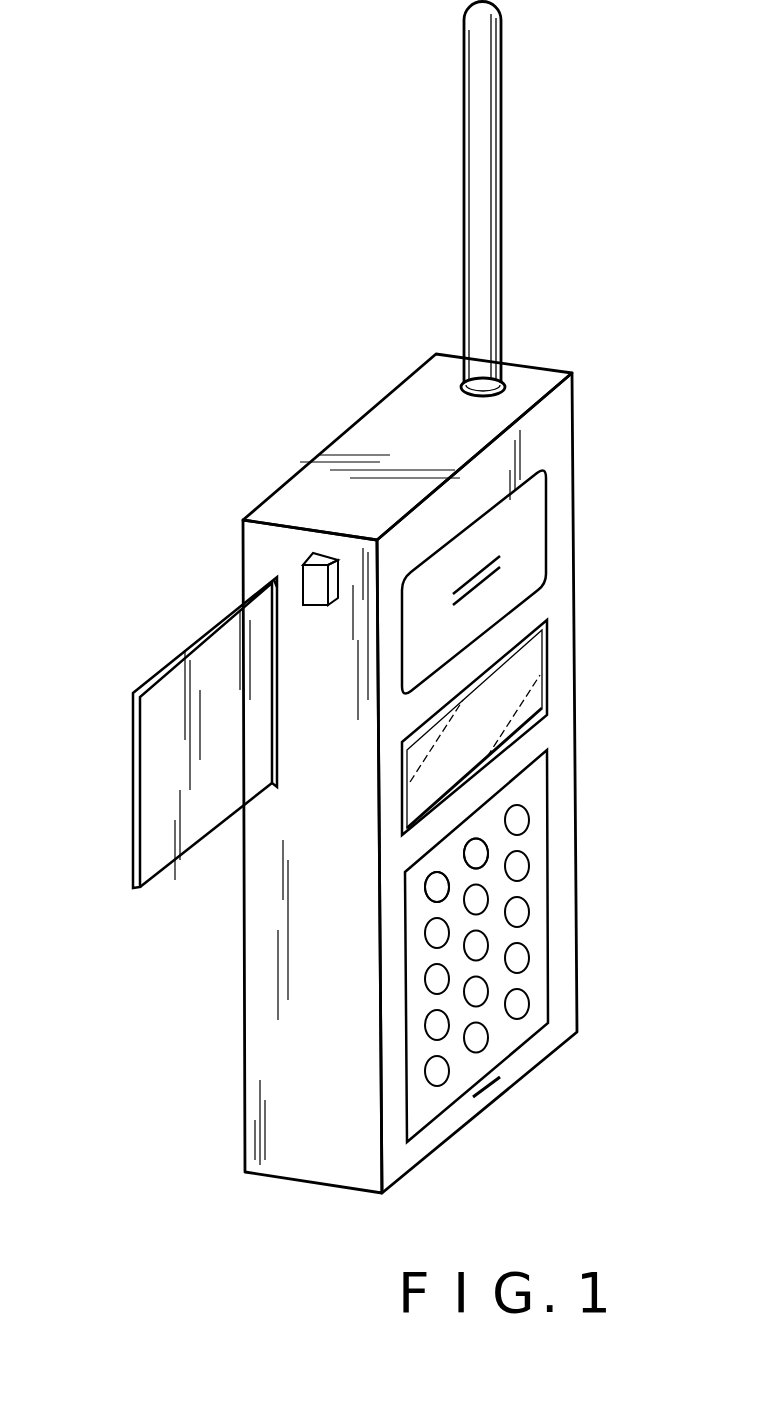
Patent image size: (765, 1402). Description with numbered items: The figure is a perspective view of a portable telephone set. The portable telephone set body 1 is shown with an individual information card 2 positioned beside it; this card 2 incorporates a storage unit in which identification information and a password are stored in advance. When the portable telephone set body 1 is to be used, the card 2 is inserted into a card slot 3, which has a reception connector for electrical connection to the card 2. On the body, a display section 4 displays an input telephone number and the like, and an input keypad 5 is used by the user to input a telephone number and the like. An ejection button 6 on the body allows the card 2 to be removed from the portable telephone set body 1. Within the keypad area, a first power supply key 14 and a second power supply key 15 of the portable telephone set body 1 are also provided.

The portable telephone set body 1 is at (262, 1028).
The individual information card 2 is at (167, 845).
The card slot 3 is at (268, 578).
The display section 4 is at (527, 700).
The input keypad 5 is at (532, 885).
The ejection button 6 is at (313, 585).
The first power supply key 14 is at (437, 890).
The second power supply key 15 is at (478, 845).